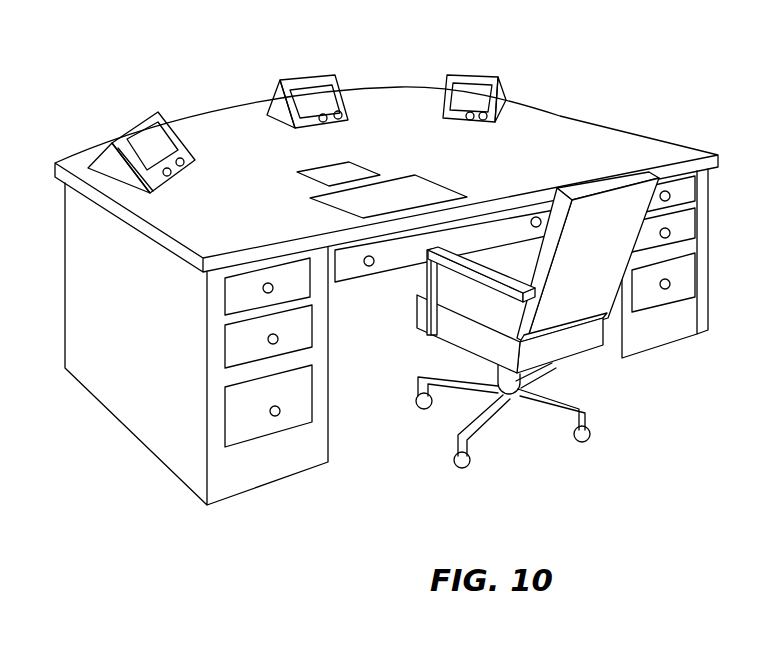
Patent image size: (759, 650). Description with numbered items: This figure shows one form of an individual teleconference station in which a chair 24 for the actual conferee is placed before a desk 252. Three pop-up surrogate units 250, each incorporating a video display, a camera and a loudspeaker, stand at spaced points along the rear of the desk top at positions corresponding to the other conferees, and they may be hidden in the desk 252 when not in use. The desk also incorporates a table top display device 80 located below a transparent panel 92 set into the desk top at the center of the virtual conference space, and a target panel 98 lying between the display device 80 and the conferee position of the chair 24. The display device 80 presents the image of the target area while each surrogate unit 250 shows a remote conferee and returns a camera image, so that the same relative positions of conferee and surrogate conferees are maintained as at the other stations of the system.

The chair 24 is at (603, 297).
The table top display unit 80 is at (322, 173).
The transparent panel 92 is at (356, 173).
The target panel 98 is at (432, 192).
The pop-up surrogate units 250 is at (145, 126).
The desk 252 is at (623, 140).